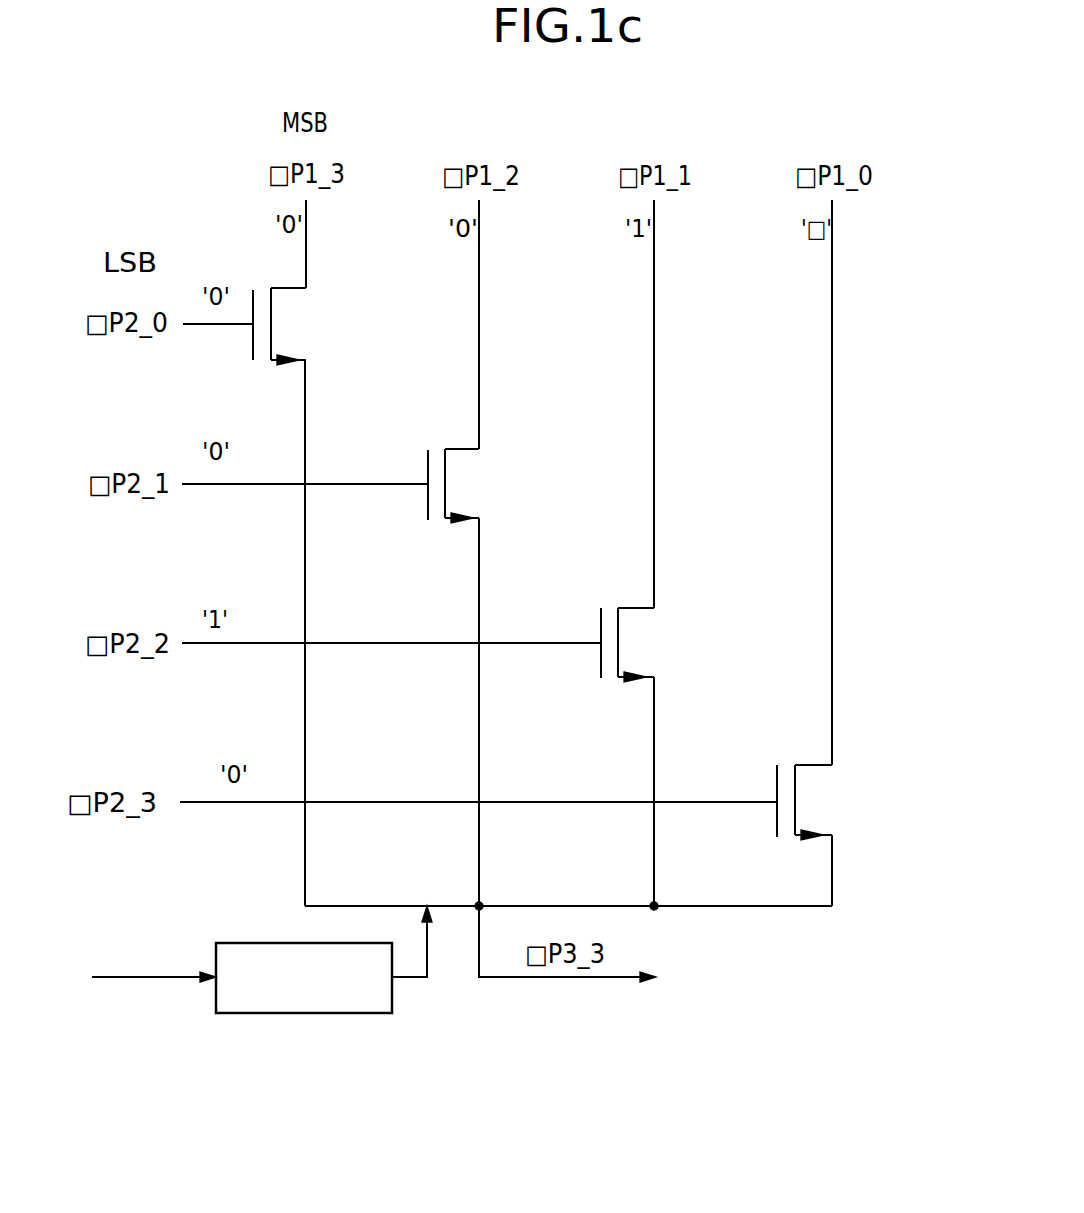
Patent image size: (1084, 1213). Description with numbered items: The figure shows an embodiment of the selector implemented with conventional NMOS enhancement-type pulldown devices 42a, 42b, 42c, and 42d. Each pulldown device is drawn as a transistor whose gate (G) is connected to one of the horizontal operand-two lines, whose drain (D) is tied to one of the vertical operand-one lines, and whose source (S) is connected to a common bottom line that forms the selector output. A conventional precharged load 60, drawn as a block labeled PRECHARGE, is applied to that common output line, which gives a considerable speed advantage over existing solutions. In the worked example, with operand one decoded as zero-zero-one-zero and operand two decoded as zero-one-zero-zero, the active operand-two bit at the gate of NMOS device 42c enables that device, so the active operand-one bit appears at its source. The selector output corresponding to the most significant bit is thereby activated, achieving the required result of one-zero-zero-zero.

The NMOS pulldown device 42a is at (292, 347).
The NMOS pulldown device 42b is at (468, 510).
The NMOS pulldown device 42c is at (645, 667).
The NMOS pulldown device 42d is at (820, 822).
The precharged load 60 is at (323, 1015).